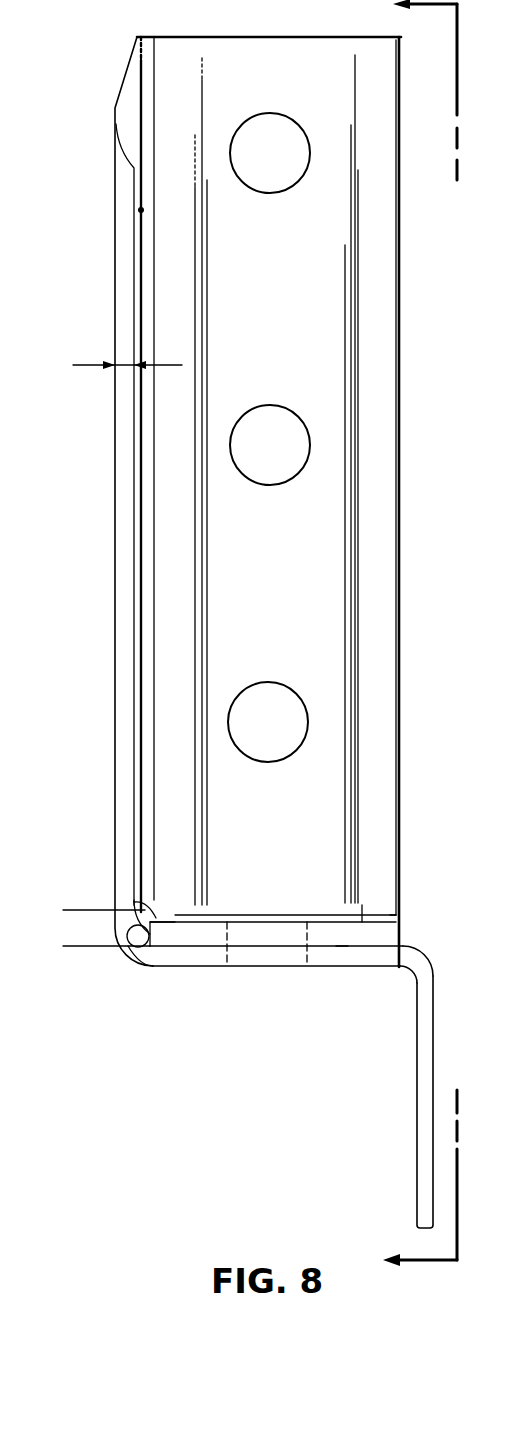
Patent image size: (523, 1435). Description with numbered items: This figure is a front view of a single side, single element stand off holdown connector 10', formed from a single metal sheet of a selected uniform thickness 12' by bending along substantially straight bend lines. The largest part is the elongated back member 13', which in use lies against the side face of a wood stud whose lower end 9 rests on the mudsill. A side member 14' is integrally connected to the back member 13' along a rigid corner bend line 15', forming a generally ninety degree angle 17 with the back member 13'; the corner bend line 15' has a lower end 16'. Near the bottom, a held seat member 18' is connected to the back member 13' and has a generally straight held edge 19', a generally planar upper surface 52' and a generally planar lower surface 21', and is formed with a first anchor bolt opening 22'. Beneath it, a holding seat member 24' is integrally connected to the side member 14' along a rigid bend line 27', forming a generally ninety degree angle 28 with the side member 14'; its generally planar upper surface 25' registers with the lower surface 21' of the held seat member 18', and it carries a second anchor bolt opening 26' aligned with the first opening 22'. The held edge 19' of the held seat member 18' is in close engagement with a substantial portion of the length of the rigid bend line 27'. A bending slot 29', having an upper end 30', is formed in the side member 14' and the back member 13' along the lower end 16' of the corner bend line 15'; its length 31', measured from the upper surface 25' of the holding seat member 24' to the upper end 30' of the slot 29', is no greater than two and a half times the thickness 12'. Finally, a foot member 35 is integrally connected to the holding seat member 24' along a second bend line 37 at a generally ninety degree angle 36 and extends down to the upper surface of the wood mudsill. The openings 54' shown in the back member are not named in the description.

The lower end 9 is at (436, 640).
The single side, single element stand off holdown connector 10' is at (233, 501).
The uniform thickness 12' is at (126, 335).
The elongated back member 13' is at (275, 476).
The side member 14' is at (98, 514).
The rigid corner bend line 15' is at (176, 474).
The lower end 16' is at (189, 885).
The angle 17 is at (162, 175).
The held seat member 18' is at (461, 502).
The generally straight held edge 19' is at (119, 990).
The lower surface 21' is at (414, 908).
The first anchor bolt opening 22' is at (273, 899).
The holding seat member 24' is at (276, 1008).
The upper surface 25' is at (336, 1004).
The second anchor bolt opening 26' is at (267, 972).
The rigid bend line 27' is at (117, 964).
The angle 28 is at (144, 912).
The bending slot 29' is at (202, 916).
The upper end 30' is at (106, 943).
The length 31' is at (104, 867).
The foot member 35 is at (434, 1075).
The angle 36 is at (383, 985).
The second bend line 37 is at (427, 958).
The upper surface 52' is at (333, 865).
The hole 54' is at (279, 419).